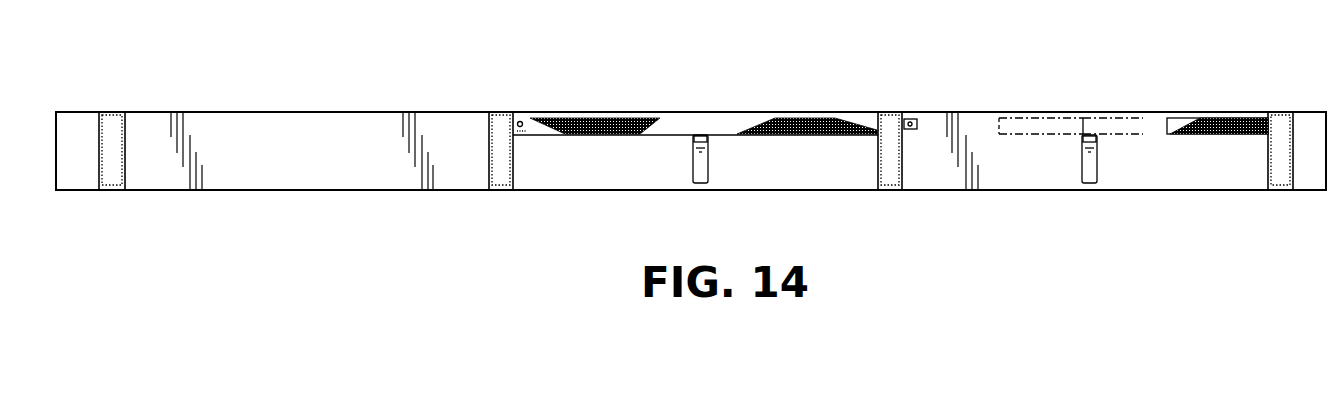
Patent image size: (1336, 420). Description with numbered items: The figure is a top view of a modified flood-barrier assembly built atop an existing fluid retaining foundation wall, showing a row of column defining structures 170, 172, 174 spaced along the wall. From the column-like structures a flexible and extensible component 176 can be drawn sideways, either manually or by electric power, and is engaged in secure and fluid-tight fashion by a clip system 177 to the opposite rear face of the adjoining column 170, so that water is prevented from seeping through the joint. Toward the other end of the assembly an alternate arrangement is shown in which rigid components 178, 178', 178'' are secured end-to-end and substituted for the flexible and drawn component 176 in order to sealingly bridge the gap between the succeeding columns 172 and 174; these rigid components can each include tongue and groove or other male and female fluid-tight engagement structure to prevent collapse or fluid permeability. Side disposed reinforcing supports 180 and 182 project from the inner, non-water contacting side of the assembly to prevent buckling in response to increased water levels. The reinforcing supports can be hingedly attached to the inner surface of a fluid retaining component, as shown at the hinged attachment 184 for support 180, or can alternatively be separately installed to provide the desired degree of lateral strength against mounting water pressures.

The column defining structure 170 is at (503, 113).
The column defining structure 172 is at (890, 113).
The column defining structure 174 is at (1280, 113).
The flexible and extensible component 176 is at (739, 125).
The clip system 177 is at (528, 119).
The rigid end-to-end secured component 178 is at (1207, 96).
The rigid end-to-end secured component 178' is at (1109, 93).
The rigid end-to-end secured component 178'' is at (1040, 93).
The side disposed reinforcing support 180 is at (693, 168).
The side disposed reinforcing support 182 is at (1092, 168).
The hinged attachment 184 is at (704, 133).